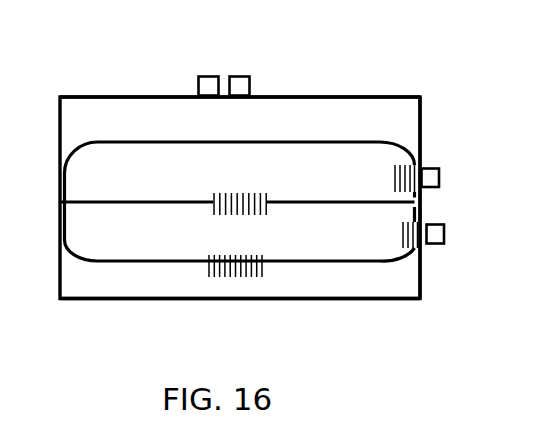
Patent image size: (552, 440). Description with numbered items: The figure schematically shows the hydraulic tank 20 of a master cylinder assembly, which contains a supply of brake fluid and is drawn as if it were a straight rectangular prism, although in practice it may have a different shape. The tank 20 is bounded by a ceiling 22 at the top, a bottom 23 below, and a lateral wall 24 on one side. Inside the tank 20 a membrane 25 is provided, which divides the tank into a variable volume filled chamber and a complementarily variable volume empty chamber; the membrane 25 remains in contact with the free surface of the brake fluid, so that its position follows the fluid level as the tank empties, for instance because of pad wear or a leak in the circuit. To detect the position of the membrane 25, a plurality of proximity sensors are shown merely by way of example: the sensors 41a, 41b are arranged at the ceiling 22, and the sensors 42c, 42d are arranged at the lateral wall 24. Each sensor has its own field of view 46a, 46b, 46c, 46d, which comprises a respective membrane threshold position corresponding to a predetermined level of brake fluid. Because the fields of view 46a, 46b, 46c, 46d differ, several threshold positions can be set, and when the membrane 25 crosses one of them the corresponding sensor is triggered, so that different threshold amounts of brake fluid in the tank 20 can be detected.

The tank 20 is at (88, 87).
The ceiling 22 is at (163, 100).
The bottom 23 is at (173, 298).
The lateral wall 24 is at (416, 271).
The membrane 25 is at (119, 149).
The sensor 41a is at (202, 75).
The sensor 41b is at (242, 75).
The sensor 42c is at (443, 170).
The sensor 42d is at (449, 230).
The field of view 46a is at (238, 191).
The field of view 46b is at (258, 278).
The field of view 46c is at (388, 172).
The field of view 46d is at (396, 232).